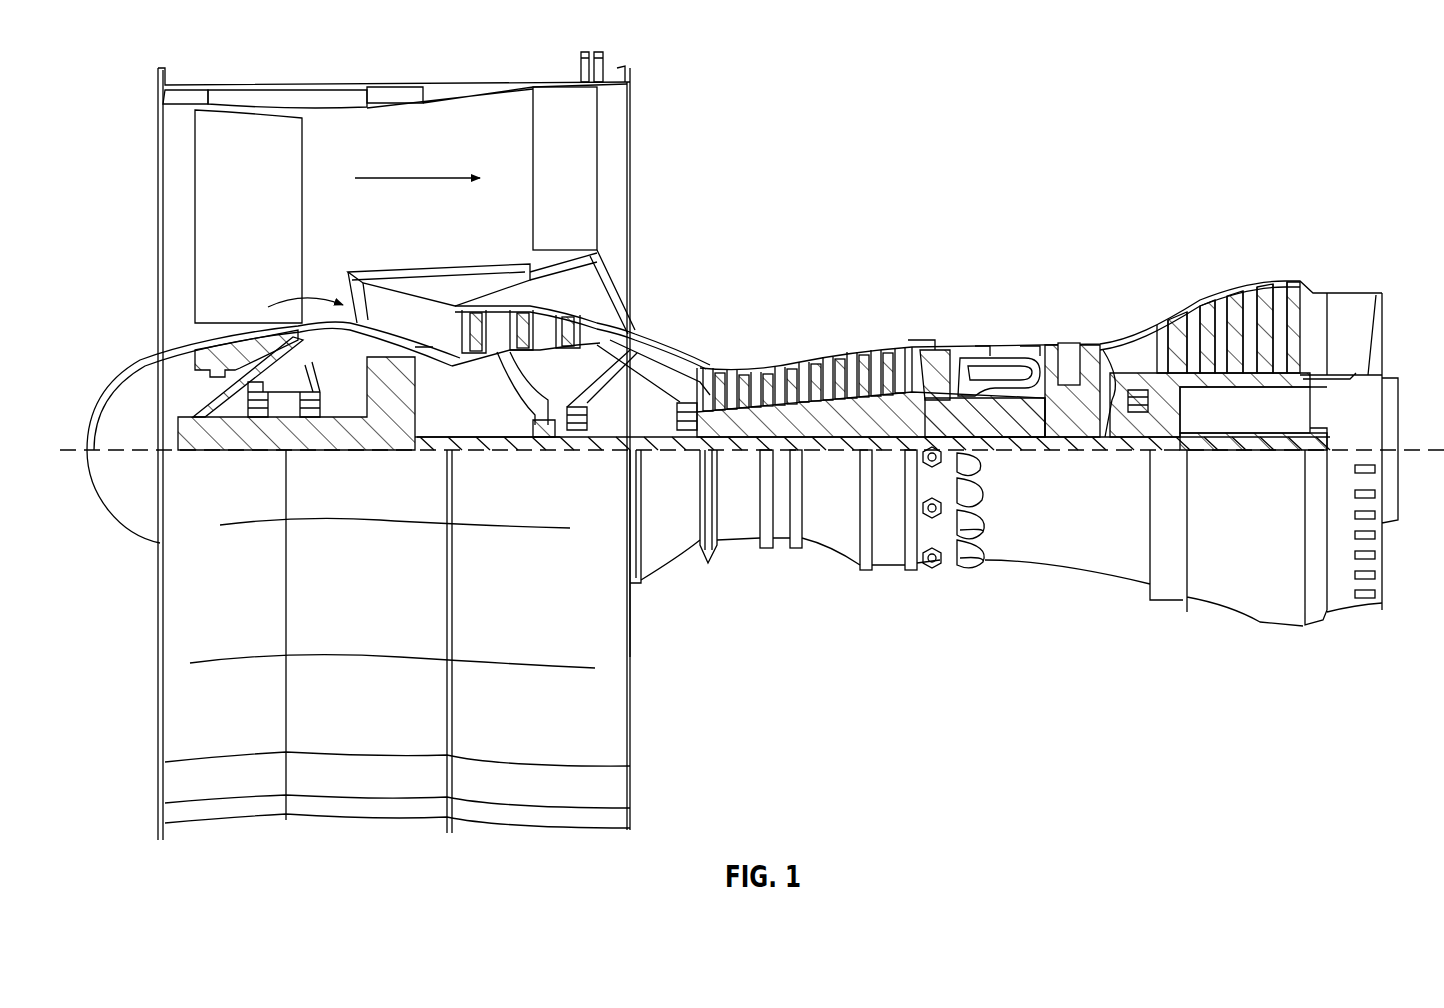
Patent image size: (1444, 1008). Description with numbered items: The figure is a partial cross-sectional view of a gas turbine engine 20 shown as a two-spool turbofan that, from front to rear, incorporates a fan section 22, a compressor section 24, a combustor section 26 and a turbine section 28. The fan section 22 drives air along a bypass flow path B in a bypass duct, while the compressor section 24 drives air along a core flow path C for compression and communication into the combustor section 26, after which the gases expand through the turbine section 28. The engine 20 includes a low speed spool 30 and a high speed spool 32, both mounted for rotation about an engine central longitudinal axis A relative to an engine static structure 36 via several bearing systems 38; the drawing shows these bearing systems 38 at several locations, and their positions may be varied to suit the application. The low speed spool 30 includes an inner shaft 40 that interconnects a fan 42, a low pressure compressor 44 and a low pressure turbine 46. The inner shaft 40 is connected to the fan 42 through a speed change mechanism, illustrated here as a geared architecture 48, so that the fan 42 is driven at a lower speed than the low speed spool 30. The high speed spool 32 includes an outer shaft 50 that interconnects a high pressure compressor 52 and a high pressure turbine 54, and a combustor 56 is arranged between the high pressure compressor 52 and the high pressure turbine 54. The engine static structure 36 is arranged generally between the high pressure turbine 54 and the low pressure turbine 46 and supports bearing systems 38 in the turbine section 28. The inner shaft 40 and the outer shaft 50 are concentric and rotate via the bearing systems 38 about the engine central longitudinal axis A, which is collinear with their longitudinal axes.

The gas turbine engine 20 is at (1206, 116).
The fan section 22 is at (250, 72).
The compressor section 24 is at (822, 300).
The combustor section 26 is at (990, 305).
The turbine section 28 is at (1137, 286).
The low speed spool 30 is at (850, 452).
The high speed spool 32 is at (903, 413).
The engine static structure 36 is at (890, 568).
The bearing systems 38 is at (263, 412).
The inner shaft 40 is at (645, 445).
The fan 42 is at (272, 205).
The low pressure compressor 44 is at (548, 322).
The low pressure turbine 46 is at (1238, 305).
The geared architecture 48 is at (397, 418).
The outer shaft 50 is at (1015, 440).
The high pressure compressor 52 is at (797, 378).
The high pressure turbine 54 is at (1070, 343).
The combustor 56 is at (995, 367).
The engine central longitudinal axis A is at (1406, 447).
The bypass flow path B is at (421, 176).
The core flow path C is at (284, 302).